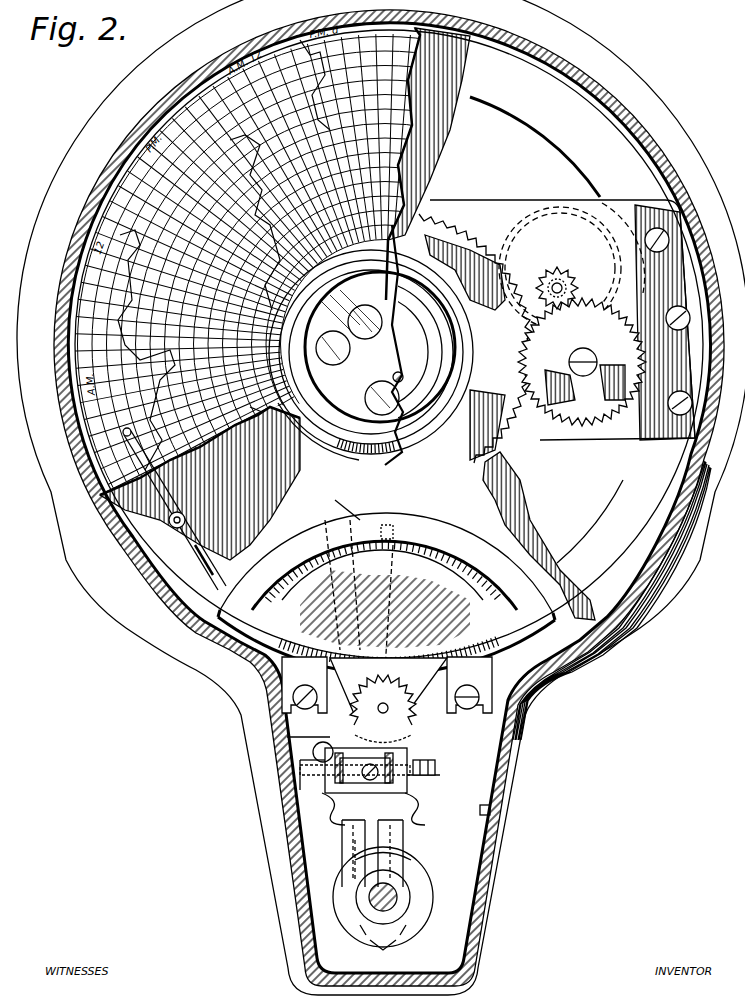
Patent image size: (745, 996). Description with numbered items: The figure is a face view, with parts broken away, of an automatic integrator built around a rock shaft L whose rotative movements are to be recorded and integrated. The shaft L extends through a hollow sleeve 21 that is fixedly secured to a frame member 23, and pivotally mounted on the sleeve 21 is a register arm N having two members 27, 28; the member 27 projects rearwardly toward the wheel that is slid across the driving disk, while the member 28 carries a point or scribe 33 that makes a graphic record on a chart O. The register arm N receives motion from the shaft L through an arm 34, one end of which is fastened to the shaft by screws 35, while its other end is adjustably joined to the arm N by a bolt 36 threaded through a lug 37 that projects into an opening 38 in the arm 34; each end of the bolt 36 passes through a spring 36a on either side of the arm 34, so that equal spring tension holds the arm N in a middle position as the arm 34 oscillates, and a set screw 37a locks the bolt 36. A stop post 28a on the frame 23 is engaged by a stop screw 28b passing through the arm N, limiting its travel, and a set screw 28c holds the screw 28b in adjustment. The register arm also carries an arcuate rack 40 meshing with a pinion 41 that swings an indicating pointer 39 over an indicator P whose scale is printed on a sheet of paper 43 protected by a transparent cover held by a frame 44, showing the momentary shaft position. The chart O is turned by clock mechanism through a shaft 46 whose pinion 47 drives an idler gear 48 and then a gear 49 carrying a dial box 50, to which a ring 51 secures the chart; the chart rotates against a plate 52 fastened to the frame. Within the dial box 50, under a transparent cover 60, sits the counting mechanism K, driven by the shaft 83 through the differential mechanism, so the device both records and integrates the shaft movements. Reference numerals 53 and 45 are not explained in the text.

The point or scribe 33 is at (122, 417).
The member of register arm 28 is at (178, 503).
The member of register arm 27 is at (335, 500).
The frame 44 is at (270, 560).
The plate 52 is at (443, 147).
The gear plate 53 is at (562, 293).
The gear 45 is at (553, 205).
The shaft 46 is at (558, 282).
The pinion 47 is at (569, 292).
The idler gear 48 is at (633, 343).
The gear 49 is at (502, 447).
The transparent cover 60 is at (405, 288).
The shaft 83 is at (404, 377).
The counting mechanism K is at (367, 400).
The dial box 50 is at (397, 443).
The ring 51 is at (312, 443).
The chart O is at (246, 429).
The indicating pointer 39 is at (390, 545).
The indicator P is at (433, 578).
The sheet of paper 43 is at (384, 581).
The arcuate rack 40 is at (318, 684).
The pinion 41 is at (367, 720).
The set screw 28c is at (490, 727).
The stop screw 28b is at (287, 737).
The stop post 28a is at (313, 749).
The frame member 23 is at (300, 770).
The set screw 37a is at (313, 772).
The opening 38 is at (337, 798).
The lug 37 is at (410, 788).
The bolt 36 is at (437, 763).
The spring 36a is at (337, 817).
The arm 34 is at (393, 777).
The register arm N is at (355, 838).
The hollow sleeve 21 is at (423, 883).
The shaft L is at (397, 897).
The screws 35 is at (390, 940).